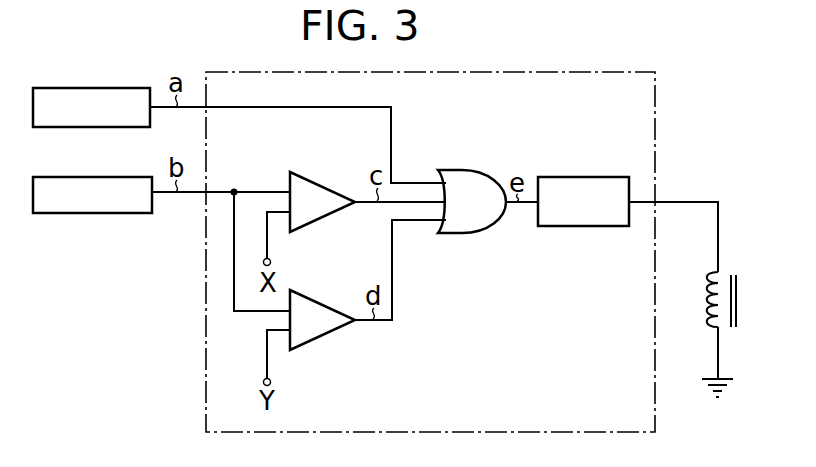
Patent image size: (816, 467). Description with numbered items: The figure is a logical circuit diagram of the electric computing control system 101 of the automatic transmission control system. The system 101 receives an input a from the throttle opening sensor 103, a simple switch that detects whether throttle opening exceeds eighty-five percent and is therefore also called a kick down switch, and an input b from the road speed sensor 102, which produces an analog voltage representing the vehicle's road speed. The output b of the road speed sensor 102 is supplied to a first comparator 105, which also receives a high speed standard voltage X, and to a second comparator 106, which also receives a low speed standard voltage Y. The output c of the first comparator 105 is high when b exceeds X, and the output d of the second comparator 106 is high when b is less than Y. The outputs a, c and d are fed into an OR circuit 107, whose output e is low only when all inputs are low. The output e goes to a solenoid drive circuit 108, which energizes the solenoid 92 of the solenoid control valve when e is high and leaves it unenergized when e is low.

The electric computing control system 101 is at (525, 70).
The road speed sensor 102 is at (73, 214).
The throttle opening sensor 103 is at (73, 128).
The first comparator 105 is at (328, 187).
The second comparator 106 is at (328, 306).
The OR circuit 107 is at (456, 148).
The solenoid drive circuit 108 is at (588, 177).
The solenoid 92 is at (720, 271).